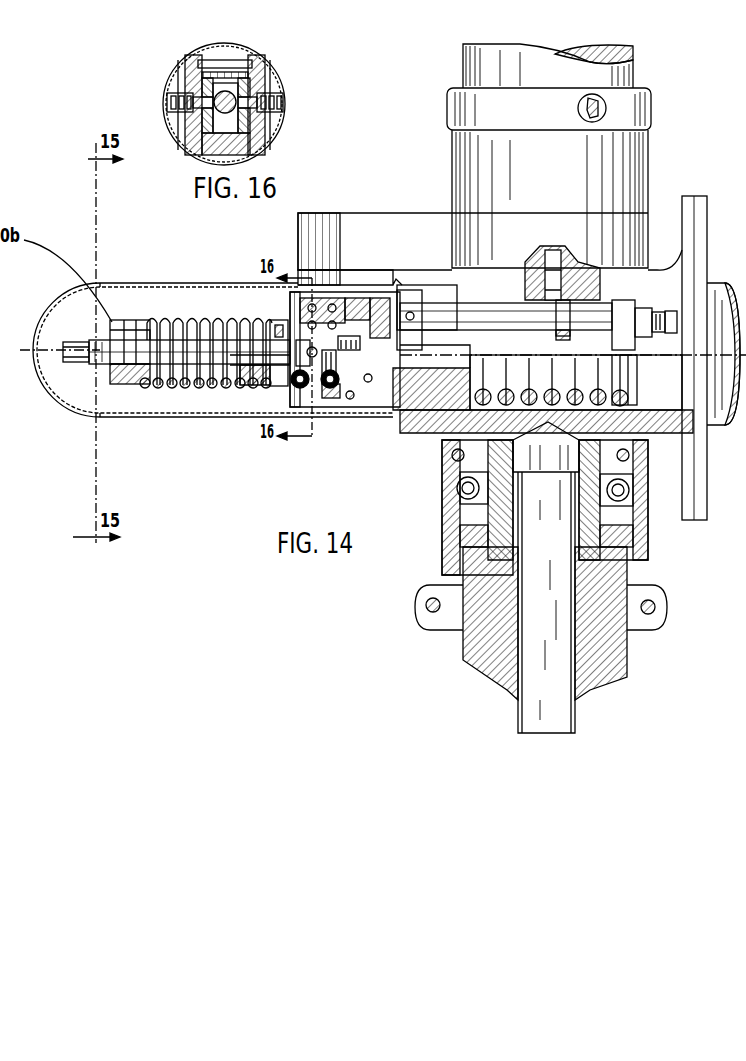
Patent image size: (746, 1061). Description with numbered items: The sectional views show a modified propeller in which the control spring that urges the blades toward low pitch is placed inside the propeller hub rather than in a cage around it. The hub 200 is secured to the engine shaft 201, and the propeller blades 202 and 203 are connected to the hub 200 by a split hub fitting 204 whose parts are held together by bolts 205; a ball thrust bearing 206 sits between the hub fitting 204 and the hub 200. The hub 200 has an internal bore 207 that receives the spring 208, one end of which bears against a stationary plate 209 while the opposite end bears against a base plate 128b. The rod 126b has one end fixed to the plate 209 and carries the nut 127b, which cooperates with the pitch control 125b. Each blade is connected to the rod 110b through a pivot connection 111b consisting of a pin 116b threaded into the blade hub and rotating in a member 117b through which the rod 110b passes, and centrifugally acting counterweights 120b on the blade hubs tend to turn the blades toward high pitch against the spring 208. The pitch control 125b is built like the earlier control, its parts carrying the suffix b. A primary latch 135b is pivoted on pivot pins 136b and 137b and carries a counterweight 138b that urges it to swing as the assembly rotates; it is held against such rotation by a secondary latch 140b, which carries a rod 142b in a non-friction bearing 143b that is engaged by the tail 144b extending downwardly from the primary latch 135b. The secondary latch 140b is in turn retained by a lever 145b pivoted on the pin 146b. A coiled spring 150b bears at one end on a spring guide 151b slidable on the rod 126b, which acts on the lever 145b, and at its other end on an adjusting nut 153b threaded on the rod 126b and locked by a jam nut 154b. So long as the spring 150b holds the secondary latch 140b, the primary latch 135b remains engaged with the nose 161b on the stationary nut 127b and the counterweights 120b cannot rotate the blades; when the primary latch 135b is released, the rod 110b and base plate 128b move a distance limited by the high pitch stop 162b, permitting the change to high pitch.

In FIG. 16, the pitch control 125b is at (218, 46).
In FIG. 14, the pitch control 125b is at (159, 274).
In FIG. 16, the primary latch 135b is at (187, 78).
In FIG. 14, the primary latch 135b is at (320, 300).
In FIG. 16, the pivot pin 136b is at (164, 96).
In FIG. 16, the pivot pin 137b is at (283, 94).
In FIG. 14, the pivot pin 137b is at (243, 383).
In FIG. 16, the rod 126b is at (263, 127).
In FIG. 14, the rod 126b is at (82, 364).
In FIG. 16, the secondary latch 140b is at (240, 140).
In FIG. 14, the secondary latch 140b is at (312, 393).
In FIG. 14, the adjusting nut 153b is at (134, 322).
In FIG. 14, the jam nut 154b is at (116, 322).
In FIG. 14, the coiled spring 150b is at (200, 318).
In FIG. 14, the spring guide 151b is at (262, 306).
In FIG. 14, the pin 146b is at (280, 322).
In FIG. 14, the counterweight 138b is at (352, 300).
In FIG. 14, the high pitch stop 162b is at (359, 332).
In FIG. 14, the nose 161b is at (351, 367).
In FIG. 14, the rod 142b is at (340, 385).
In FIG. 14, the non-friction bearing 143b is at (336, 388).
In FIG. 14, the tail 144b is at (298, 390).
In FIG. 14, the lever 145b is at (285, 388).
In FIG. 14, the centrifugally acting counterweight 120b is at (422, 249).
In FIG. 14, the nut 127b is at (385, 335).
In FIG. 14, the base plate 128b is at (442, 298).
In FIG. 14, the rod 110b is at (462, 313).
In FIG. 14, the pin 116b is at (551, 262).
In FIG. 14, the pivot connection 111b is at (570, 298).
In FIG. 14, the member 117b is at (644, 315).
In FIG. 14, the propeller blade 203 is at (478, 70).
In FIG. 14, the engine shaft 201 is at (721, 398).
In FIG. 14, the spring 208 is at (488, 388).
In FIG. 14, the stationary plate 209 is at (637, 374).
In FIG. 14, the internal bore 207 is at (628, 400).
In FIG. 14, the hub 200 is at (462, 486).
In FIG. 14, the ball thrust bearing 206 is at (457, 492).
In FIG. 14, the split hub fitting 204 is at (613, 548).
In FIG. 14, the propeller blade 202 is at (472, 653).
In FIG. 14, the bolts 205 is at (660, 600).